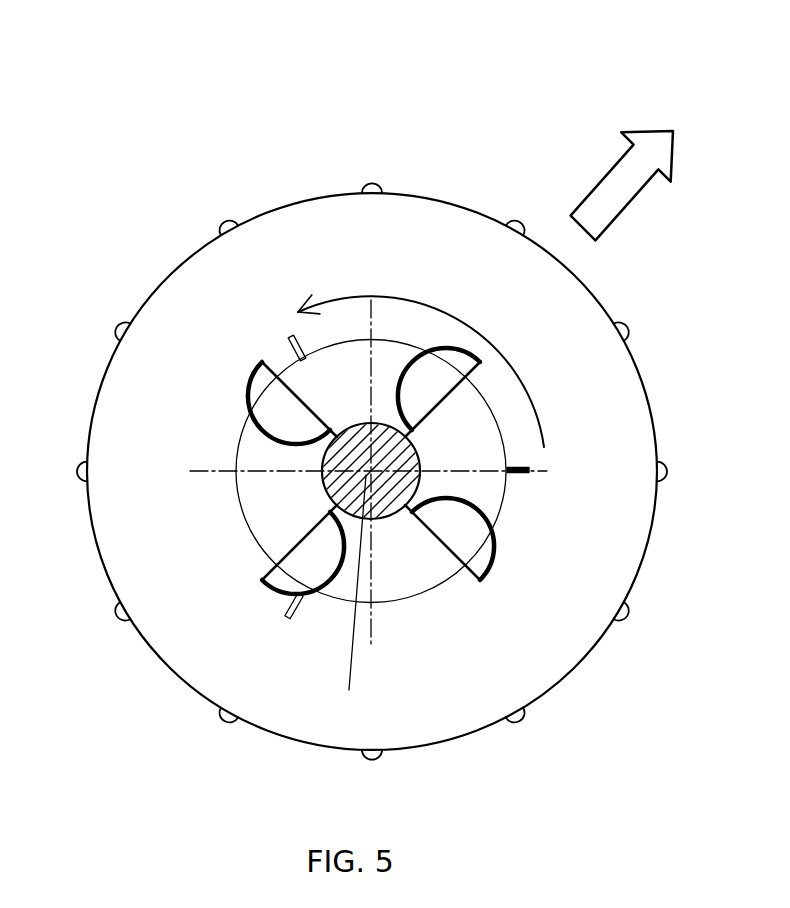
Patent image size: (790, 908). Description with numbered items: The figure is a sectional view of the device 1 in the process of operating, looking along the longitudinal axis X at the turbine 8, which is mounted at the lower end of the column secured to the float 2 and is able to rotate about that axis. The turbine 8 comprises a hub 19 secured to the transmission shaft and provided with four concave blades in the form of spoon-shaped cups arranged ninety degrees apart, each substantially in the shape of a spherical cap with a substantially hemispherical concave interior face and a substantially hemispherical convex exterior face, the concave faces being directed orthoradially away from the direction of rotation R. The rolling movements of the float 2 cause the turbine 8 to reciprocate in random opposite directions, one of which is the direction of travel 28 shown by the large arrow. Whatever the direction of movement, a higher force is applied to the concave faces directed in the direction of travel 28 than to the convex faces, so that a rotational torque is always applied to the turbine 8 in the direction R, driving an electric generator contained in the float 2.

The device 1 is at (294, 158).
The float 2 is at (139, 274).
The turbine 8 is at (272, 461).
The hub 19 is at (413, 465).
The direction of travel 28 is at (610, 197).